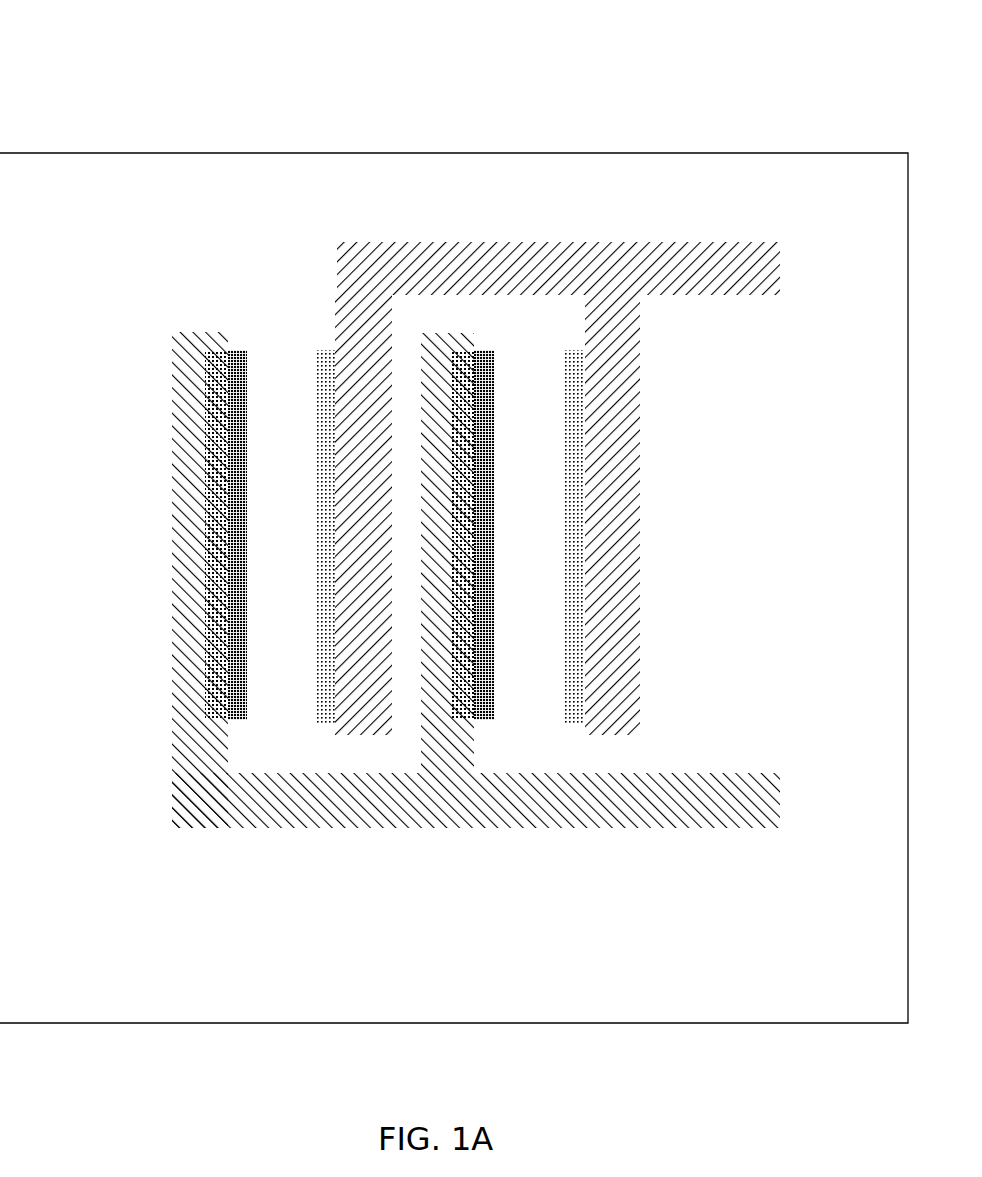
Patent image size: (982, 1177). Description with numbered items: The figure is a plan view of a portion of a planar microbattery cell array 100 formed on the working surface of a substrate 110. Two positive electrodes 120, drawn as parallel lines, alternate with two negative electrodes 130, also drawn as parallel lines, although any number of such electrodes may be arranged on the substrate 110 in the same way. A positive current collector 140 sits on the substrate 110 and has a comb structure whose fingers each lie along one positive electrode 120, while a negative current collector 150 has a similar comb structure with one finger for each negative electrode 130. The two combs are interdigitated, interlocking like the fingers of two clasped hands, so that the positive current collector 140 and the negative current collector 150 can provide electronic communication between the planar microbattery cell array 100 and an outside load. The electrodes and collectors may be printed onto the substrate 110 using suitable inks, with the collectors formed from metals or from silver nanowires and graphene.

The planar microbattery cell array 100 is at (136, 114).
The substrate 110 is at (849, 958).
The positive electrodes 120 is at (488, 400).
The negative electrodes 130 is at (323, 555).
The positive current collector 140 is at (192, 762).
The negative current collector 150 is at (672, 278).